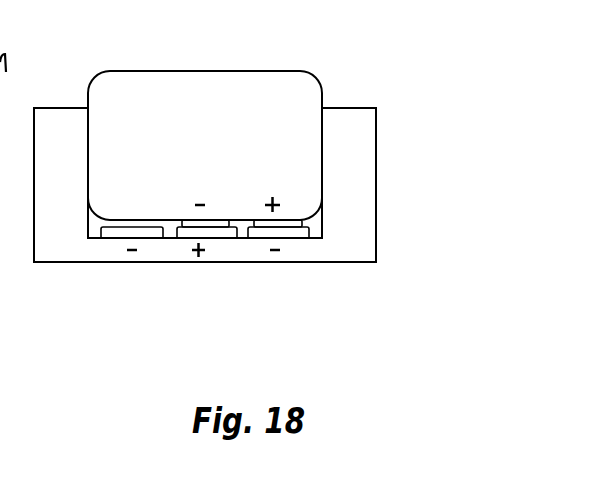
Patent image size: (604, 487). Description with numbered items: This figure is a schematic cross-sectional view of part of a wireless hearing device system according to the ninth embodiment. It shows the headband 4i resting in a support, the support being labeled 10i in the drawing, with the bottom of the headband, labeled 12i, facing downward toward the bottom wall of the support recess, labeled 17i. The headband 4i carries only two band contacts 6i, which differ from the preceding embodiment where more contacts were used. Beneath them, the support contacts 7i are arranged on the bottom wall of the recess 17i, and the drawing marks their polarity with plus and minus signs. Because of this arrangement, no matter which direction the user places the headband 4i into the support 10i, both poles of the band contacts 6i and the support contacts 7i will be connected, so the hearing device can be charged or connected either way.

The headband 4i is at (186, 105).
The band contacts 6i is at (187, 283).
The support contacts 7i is at (151, 238).
The housing 10i is at (355, 166).
The insulating gap between pads 12i is at (242, 220).
The gap at recess corner 17i is at (95, 233).